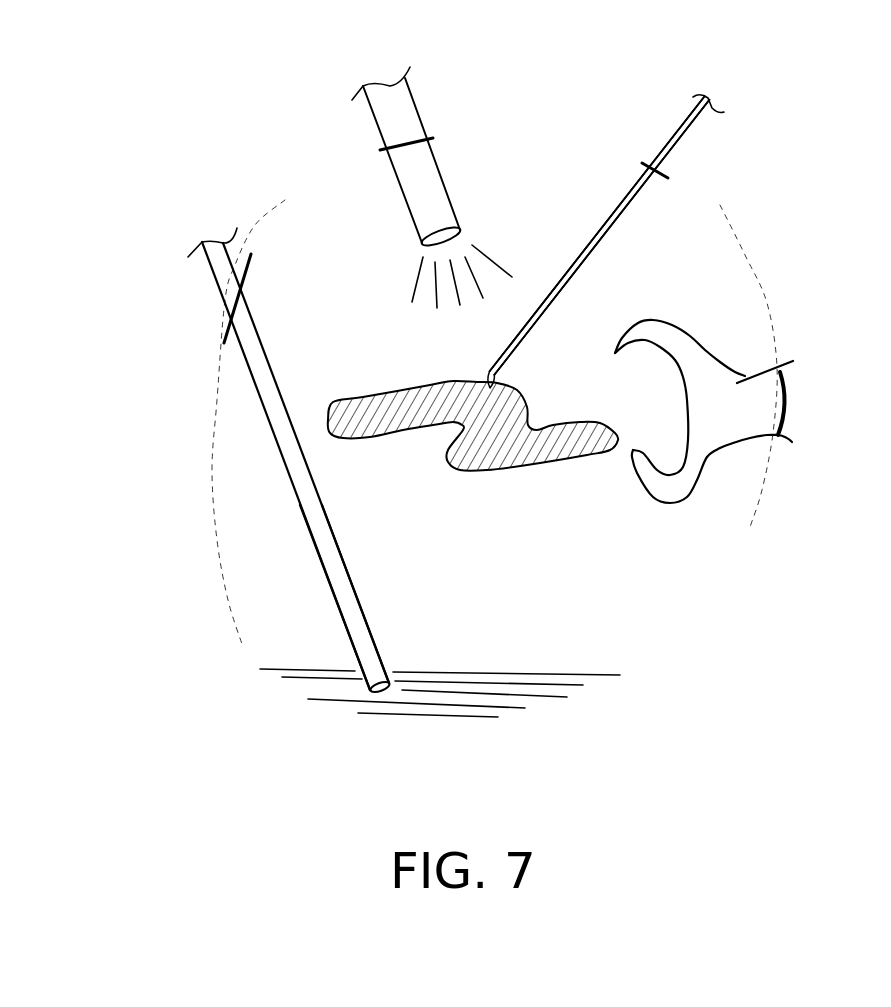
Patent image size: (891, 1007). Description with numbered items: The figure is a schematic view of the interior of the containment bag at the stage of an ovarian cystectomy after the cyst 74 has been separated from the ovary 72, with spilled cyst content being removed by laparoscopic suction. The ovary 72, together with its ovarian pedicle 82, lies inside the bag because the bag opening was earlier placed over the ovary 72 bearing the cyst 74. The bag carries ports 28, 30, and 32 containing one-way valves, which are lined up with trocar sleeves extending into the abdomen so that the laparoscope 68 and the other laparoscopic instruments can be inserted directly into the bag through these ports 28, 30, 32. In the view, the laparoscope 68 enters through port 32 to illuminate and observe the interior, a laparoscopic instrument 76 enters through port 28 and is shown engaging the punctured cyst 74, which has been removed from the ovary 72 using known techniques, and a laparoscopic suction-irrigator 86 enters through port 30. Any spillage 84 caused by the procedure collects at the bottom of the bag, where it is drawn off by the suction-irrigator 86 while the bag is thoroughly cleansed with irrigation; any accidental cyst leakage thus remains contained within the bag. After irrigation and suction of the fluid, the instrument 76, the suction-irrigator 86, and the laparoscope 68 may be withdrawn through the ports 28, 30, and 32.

The port 28 is at (688, 175).
The port 30 is at (200, 343).
The port 32 is at (440, 128).
The laparoscope 68 is at (453, 203).
The ovary 72 is at (745, 376).
The cyst 74 is at (500, 450).
The laparoscopic instrument 76 is at (610, 238).
The ovarian pedicle 82 is at (786, 403).
The spillage 84 is at (525, 690).
The laparoscopic suction-irrigator 86 is at (300, 505).